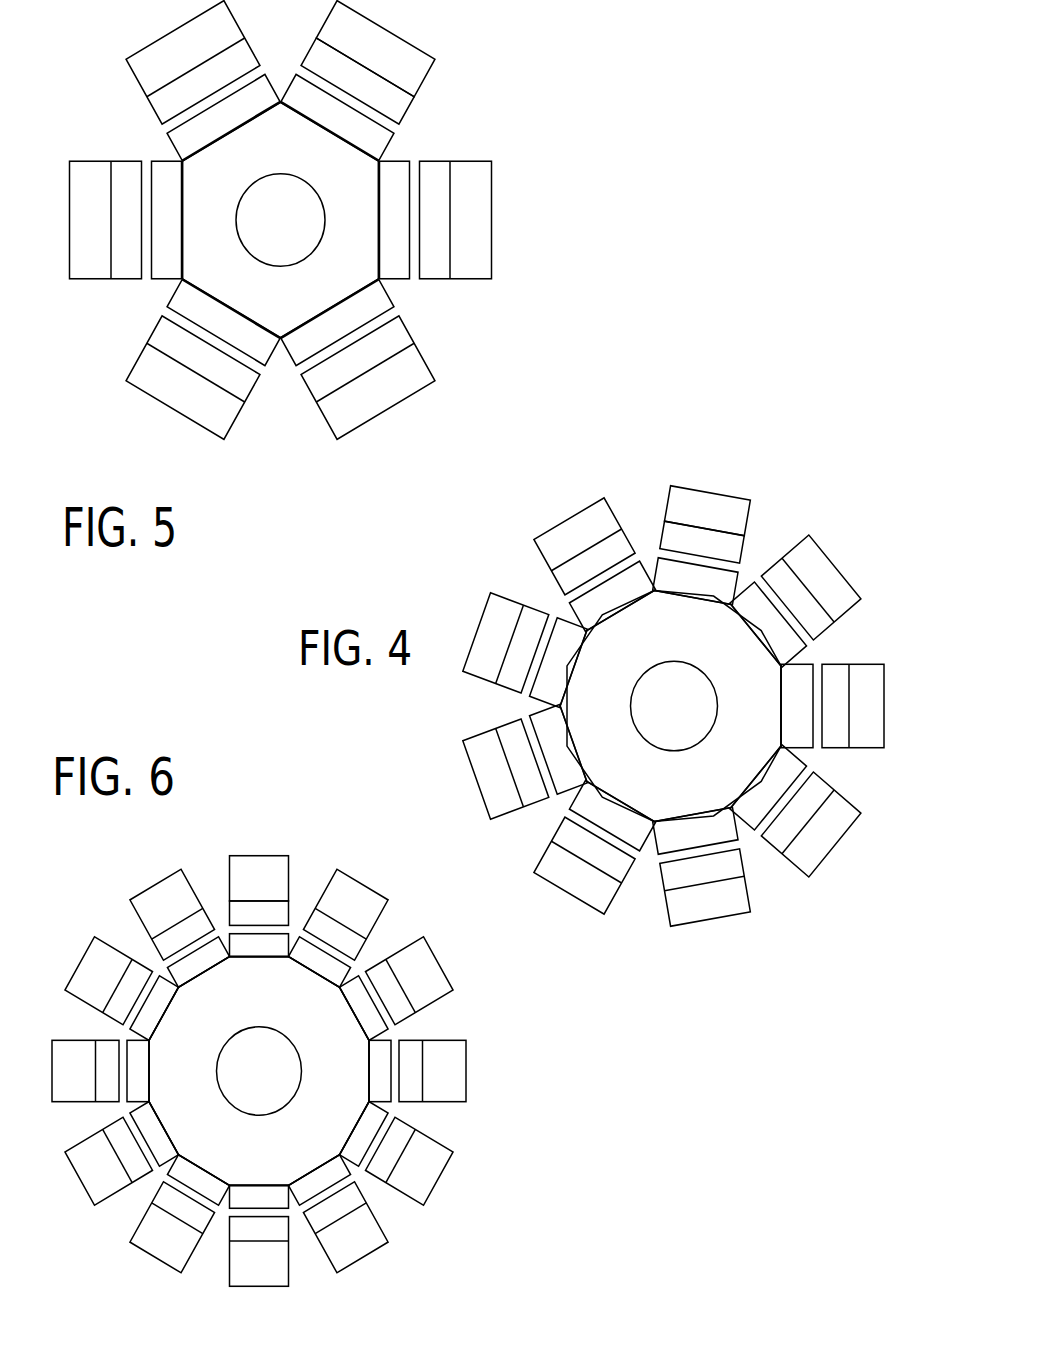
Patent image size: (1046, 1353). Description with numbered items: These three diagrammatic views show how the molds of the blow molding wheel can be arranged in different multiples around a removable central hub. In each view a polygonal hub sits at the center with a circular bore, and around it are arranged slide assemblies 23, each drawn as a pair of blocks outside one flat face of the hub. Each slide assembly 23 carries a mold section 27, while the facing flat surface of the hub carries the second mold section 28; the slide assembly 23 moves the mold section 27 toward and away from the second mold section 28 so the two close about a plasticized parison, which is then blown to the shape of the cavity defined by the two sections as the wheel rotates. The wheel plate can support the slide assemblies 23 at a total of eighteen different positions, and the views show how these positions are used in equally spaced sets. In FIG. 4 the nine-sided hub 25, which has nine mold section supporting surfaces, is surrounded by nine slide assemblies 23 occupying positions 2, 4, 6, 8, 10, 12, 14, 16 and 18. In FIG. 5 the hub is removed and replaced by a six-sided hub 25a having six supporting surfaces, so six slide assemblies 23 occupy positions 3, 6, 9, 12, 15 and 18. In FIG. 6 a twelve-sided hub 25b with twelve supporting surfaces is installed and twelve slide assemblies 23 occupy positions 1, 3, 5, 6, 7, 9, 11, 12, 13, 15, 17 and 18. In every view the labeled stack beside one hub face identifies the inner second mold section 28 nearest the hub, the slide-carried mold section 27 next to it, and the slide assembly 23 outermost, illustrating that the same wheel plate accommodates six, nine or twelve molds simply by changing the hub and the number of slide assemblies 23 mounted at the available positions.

In FIG. 6, the slide assembly position 1 is at (259, 976).
In FIG. 4, the slide assembly position 2 is at (692, 612).
In FIG. 5, the slide assembly position 3 is at (329, 132).
In FIG. 6, the slide assembly position 3 is at (313, 982).
In FIG. 4, the slide assembly position 4 is at (755, 634).
In FIG. 6, the slide assembly position 5 is at (345, 1013).
In FIG. 5, the slide assembly position 6 is at (367, 220).
In FIG. 4, the slide assembly position 6 is at (767, 706).
In FIG. 6, the slide assembly position 6 is at (353, 1070).
In FIG. 6, the slide assembly position 7 is at (348, 1128).
In FIG. 4, the slide assembly position 8 is at (756, 776).
In FIG. 5, the slide assembly position 9 is at (329, 307).
In FIG. 6, the slide assembly position 9 is at (313, 1159).
In FIG. 4, the slide assembly position 10 is at (692, 800).
In FIG. 6, the slide assembly position 11 is at (259, 1165).
In FIG. 5, the slide assembly position 12 is at (231, 307).
In FIG. 4, the slide assembly position 12 is at (620, 795).
In FIG. 6, the slide assembly position 12 is at (203, 1158).
In FIG. 6, the slide assembly position 13 is at (173, 1128).
In FIG. 4, the slide assembly position 14 is at (586, 743).
In FIG. 5, the slide assembly position 15 is at (200, 220).
In FIG. 6, the slide assembly position 15 is at (167, 1070).
In FIG. 4, the slide assembly position 16 is at (585, 668).
In FIG. 6, the slide assembly position 17 is at (175, 1013).
In FIG. 5, the slide assembly position 18 is at (231, 131).
In FIG. 4, the slide assembly position 18 is at (620, 618).
In FIG. 6, the slide assembly position 18 is at (203, 981).
In FIG. 5, the slide assembly 23 is at (375, 49).
In FIG. 4, the slide assembly 23 is at (708, 511).
In FIG. 6, the slide assembly 23 is at (259, 878).
In FIG. 4, the hub 25 is at (587, 717).
In FIG. 5, the hub 25a is at (330, 197).
In FIG. 6, the hub 25b is at (310, 1103).
In FIG. 5, the mold section 27 is at (357, 81).
In FIG. 4, the mold section 27 is at (702, 542).
In FIG. 6, the mold section 27 is at (259, 913).
In FIG. 5, the second mold section 28 is at (337, 117).
In FIG. 4, the second mold section 28 is at (695, 581).
In FIG. 6, the second mold section 28 is at (259, 946).